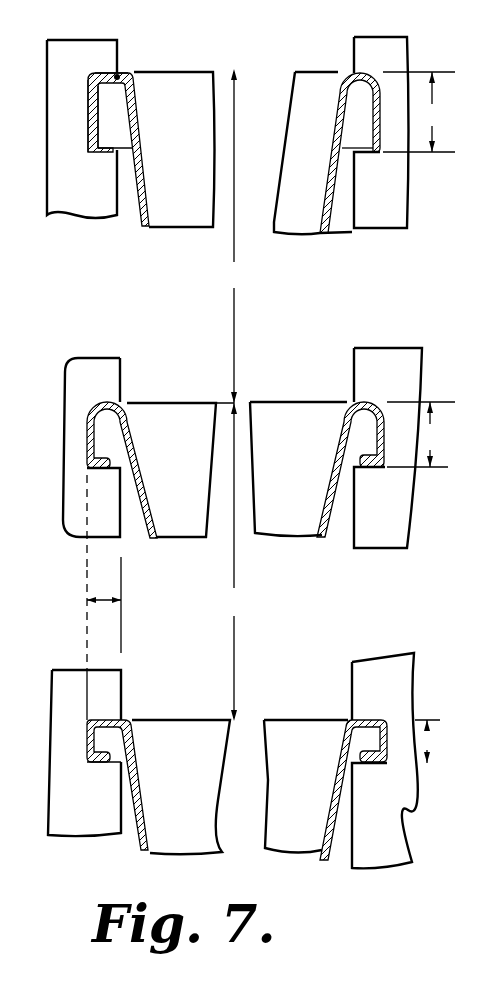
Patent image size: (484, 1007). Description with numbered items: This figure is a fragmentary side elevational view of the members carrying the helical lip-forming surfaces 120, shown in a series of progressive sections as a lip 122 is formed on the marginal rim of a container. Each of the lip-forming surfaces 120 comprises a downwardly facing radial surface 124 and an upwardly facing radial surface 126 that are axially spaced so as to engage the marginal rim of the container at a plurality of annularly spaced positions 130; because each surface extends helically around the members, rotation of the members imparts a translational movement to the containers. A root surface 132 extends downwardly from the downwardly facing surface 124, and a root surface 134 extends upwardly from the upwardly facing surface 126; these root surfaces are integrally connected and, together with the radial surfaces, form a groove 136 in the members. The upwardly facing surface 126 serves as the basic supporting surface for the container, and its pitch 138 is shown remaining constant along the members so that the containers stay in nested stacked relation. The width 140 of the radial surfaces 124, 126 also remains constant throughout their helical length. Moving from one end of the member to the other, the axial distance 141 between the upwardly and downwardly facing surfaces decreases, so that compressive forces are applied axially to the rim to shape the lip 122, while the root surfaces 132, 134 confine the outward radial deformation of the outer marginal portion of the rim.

The lip-forming surfaces 120 is at (121, 145).
The lip 122 is at (100, 761).
The downwardly facing radial surfaces 124 is at (100, 74).
The upwardly facing radial surfaces 126 is at (110, 144).
The annularly spaced positions 130 is at (387, 100).
The root surface 132 is at (93, 100).
The root surface 134 is at (92, 120).
The groove 136 is at (368, 160).
The pitch 138 is at (235, 395).
The width 140 is at (105, 600).
The axial distance 141 is at (419, 417).